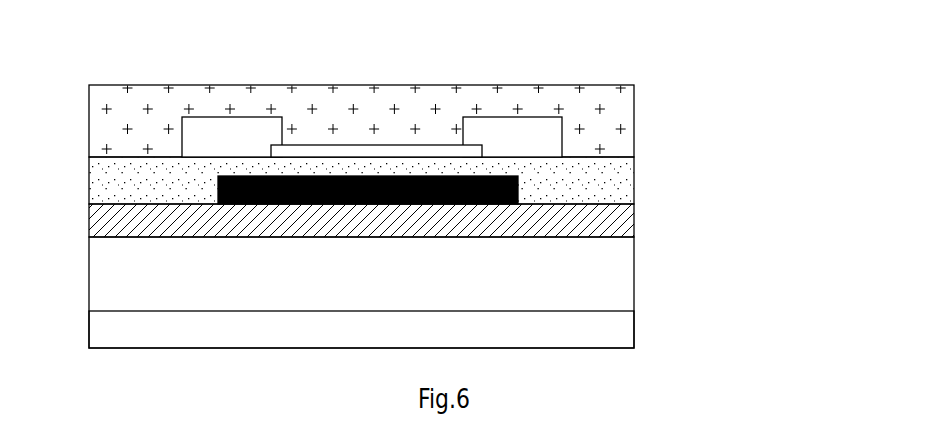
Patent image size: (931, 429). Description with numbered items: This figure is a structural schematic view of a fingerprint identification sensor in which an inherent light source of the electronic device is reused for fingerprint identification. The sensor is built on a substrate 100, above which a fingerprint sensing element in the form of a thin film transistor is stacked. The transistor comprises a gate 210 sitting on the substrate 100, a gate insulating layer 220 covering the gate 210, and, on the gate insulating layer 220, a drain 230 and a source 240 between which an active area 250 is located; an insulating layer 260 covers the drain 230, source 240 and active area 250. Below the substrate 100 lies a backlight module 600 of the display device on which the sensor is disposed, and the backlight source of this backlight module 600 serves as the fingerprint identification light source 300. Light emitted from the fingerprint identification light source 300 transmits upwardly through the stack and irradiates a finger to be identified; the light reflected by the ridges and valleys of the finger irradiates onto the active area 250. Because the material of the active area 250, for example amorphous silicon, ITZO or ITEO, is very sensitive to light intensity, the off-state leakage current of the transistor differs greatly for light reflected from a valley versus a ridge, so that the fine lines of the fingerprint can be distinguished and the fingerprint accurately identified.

The substrate 100 is at (635, 218).
The gate 210 is at (337, 203).
The gate insulating layer 220 is at (635, 172).
The drain 230 is at (232, 138).
The source 240 is at (512, 138).
The active area 250 is at (322, 150).
The insulating layer 260 is at (635, 133).
The fingerprint identification light source 300 is at (361, 330).
The backlight module 600 is at (636, 237).